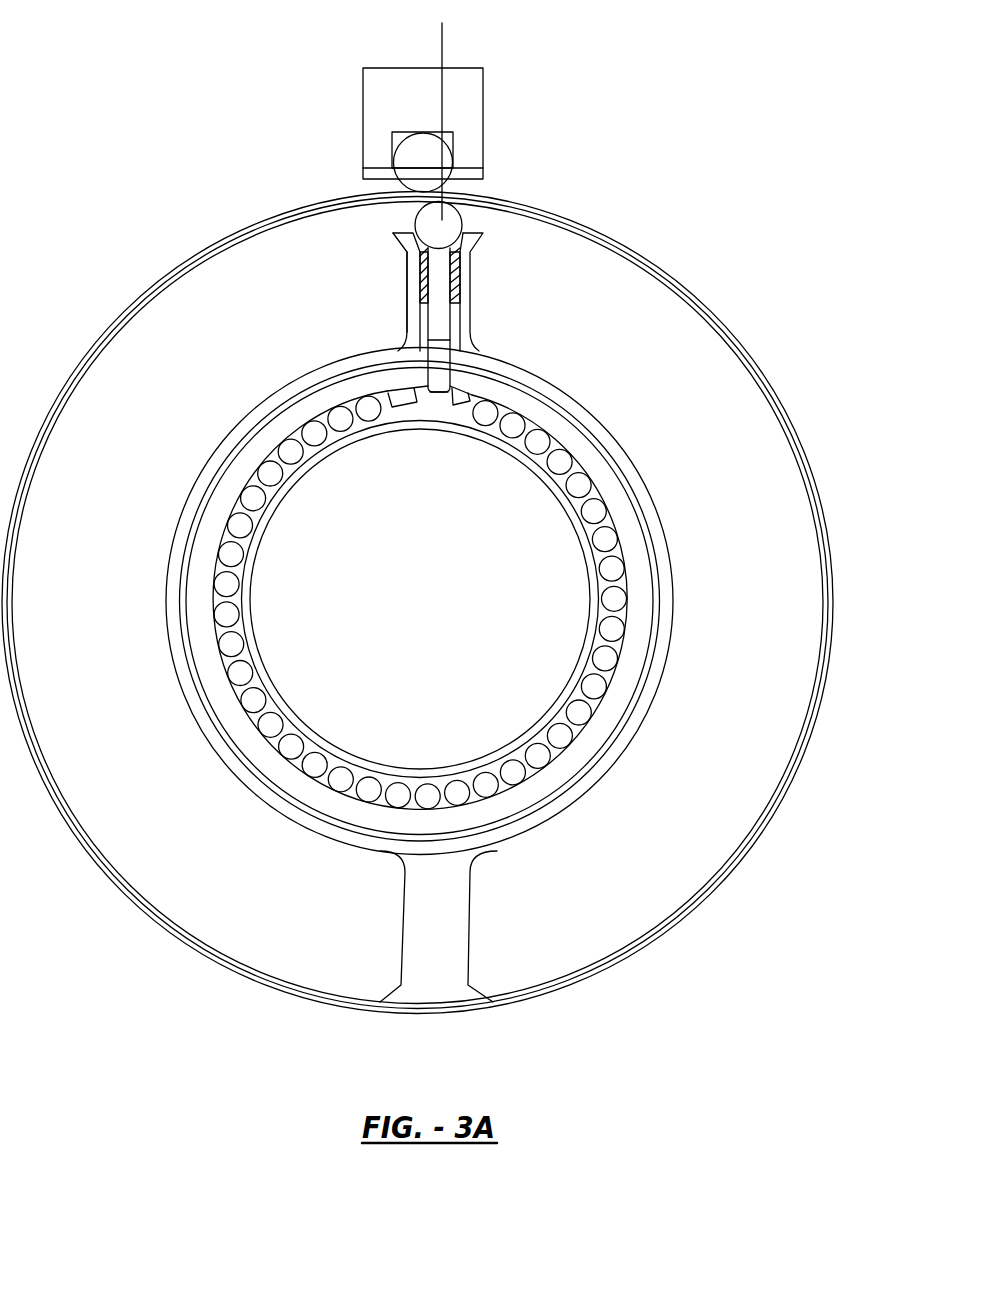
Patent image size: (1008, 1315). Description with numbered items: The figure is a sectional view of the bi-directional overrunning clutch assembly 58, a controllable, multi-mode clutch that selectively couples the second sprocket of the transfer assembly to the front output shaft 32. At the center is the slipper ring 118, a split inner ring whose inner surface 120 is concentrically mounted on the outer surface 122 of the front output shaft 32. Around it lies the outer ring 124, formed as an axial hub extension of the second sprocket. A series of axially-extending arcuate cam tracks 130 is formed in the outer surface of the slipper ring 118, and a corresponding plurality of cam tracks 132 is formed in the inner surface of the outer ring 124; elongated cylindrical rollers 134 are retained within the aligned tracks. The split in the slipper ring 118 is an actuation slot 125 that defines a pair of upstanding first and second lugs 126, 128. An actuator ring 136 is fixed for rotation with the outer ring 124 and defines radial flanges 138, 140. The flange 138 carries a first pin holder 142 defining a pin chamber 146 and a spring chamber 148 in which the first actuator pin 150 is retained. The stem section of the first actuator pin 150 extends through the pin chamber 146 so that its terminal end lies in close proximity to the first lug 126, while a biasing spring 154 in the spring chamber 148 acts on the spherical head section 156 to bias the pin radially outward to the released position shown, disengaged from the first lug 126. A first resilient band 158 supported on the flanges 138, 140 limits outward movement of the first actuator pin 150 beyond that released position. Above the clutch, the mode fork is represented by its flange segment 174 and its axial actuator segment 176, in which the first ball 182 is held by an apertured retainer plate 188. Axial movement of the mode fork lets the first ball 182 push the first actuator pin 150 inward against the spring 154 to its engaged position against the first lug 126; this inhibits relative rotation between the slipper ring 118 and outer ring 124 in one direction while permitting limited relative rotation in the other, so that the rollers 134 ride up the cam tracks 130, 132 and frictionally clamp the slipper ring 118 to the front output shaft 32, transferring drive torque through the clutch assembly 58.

The front output shaft 32 is at (434, 609).
The clutch assembly 58 is at (512, 670).
The slipper ring 118 is at (572, 508).
The inner surface 120 is at (590, 586).
The outer surface 122 is at (586, 624).
The outer ring 124 is at (625, 514).
The actuation slot 125 is at (436, 400).
The first lug 126 is at (458, 408).
The second lug 128 is at (403, 408).
The cam tracks 130 is at (552, 468).
The cam tracks 132 is at (243, 662).
The rollers 134 is at (372, 794).
The actuator ring 136 is at (537, 378).
The radial flange 138 is at (407, 384).
The radial flange 140 is at (462, 927).
The first pin holder 142 is at (419, 316).
The pin chamber 146 is at (448, 338).
The spring chamber 148 is at (458, 278).
The first actuator pin 150 is at (404, 392).
The biasing spring 154 is at (421, 266).
The spherical head section 156 is at (455, 225).
The first resilient band 158 is at (664, 268).
The flange segment 174 is at (434, 121).
The actuator segment 176 is at (472, 110).
The first ball 182 is at (418, 158).
The retainer plate 188 is at (373, 174).